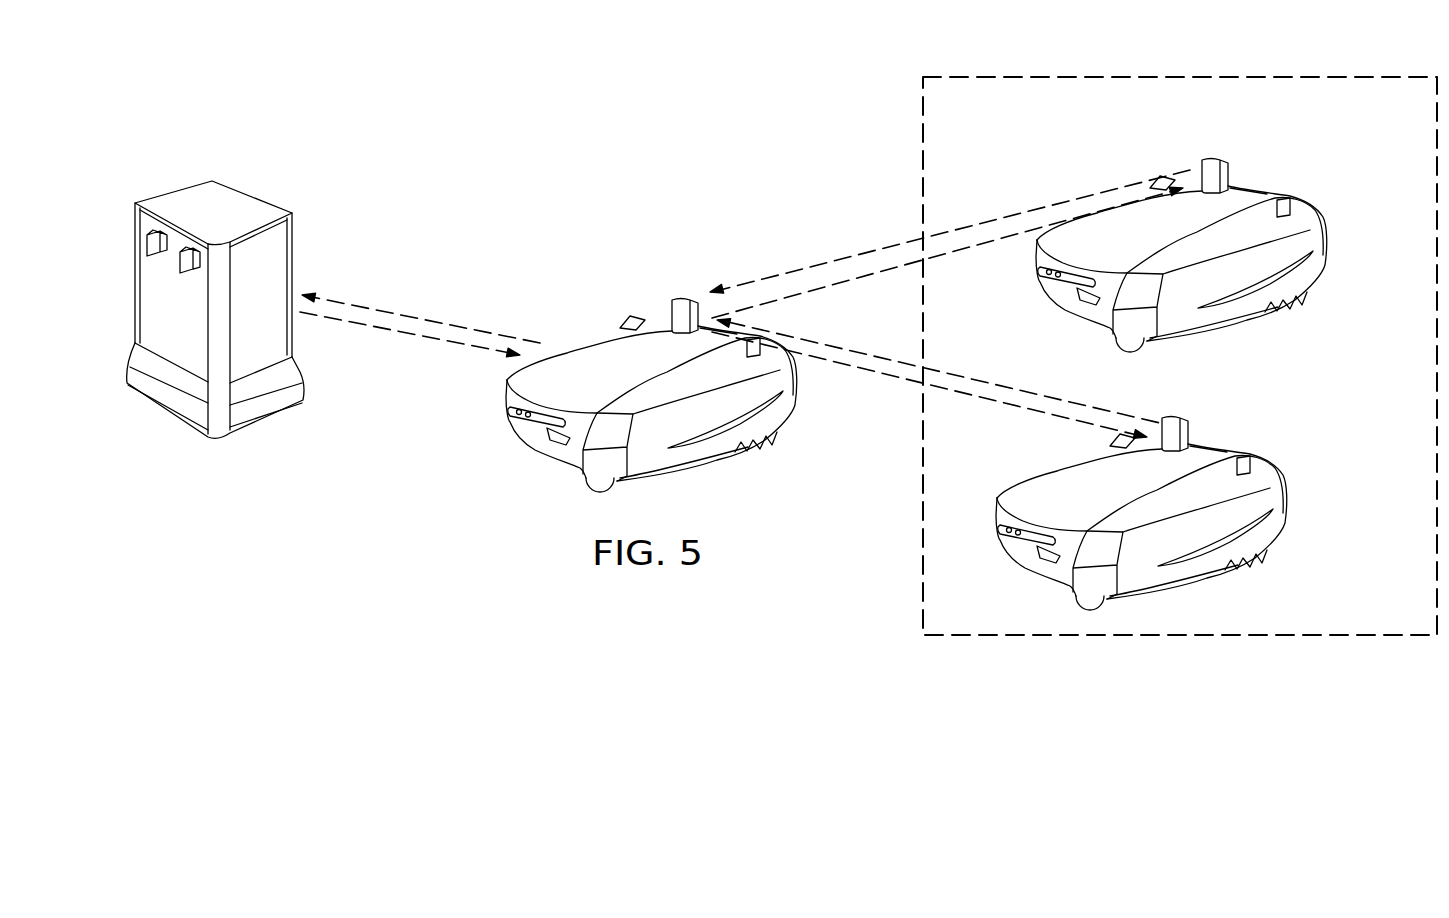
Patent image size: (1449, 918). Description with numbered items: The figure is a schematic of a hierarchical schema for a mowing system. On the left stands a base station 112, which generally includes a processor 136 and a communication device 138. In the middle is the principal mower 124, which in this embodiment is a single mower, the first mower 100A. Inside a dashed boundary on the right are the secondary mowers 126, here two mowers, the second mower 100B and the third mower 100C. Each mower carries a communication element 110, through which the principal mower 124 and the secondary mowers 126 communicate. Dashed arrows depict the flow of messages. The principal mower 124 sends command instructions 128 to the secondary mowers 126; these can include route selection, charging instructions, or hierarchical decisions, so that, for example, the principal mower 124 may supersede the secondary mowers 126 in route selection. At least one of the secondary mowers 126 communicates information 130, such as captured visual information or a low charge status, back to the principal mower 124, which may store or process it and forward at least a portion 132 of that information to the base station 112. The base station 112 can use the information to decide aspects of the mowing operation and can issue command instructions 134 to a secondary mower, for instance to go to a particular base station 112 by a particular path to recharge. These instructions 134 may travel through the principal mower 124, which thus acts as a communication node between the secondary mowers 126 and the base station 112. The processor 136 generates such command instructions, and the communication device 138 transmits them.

The base station 112 is at (253, 190).
The processor 136 is at (147, 243).
The communication device 138 is at (178, 257).
The first mower 100A is at (580, 333).
The second mower 100B is at (1322, 213).
The third mower 100C is at (1292, 503).
The communication element 110 is at (678, 298).
The principal mower 124 is at (618, 250).
The secondary mowers 126 is at (1195, 72).
The command instructions 128 is at (953, 247).
The information 130 is at (863, 252).
The portion of the information 132 is at (400, 317).
The command instructions 134 is at (445, 343).